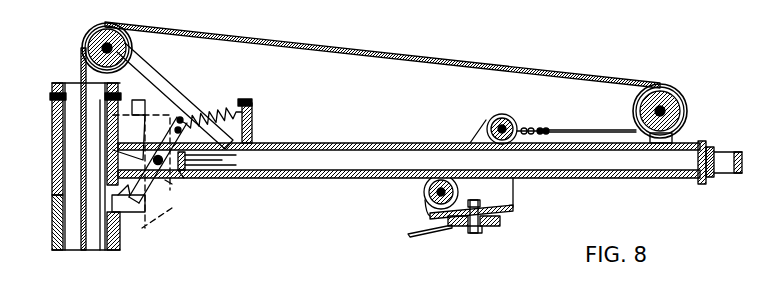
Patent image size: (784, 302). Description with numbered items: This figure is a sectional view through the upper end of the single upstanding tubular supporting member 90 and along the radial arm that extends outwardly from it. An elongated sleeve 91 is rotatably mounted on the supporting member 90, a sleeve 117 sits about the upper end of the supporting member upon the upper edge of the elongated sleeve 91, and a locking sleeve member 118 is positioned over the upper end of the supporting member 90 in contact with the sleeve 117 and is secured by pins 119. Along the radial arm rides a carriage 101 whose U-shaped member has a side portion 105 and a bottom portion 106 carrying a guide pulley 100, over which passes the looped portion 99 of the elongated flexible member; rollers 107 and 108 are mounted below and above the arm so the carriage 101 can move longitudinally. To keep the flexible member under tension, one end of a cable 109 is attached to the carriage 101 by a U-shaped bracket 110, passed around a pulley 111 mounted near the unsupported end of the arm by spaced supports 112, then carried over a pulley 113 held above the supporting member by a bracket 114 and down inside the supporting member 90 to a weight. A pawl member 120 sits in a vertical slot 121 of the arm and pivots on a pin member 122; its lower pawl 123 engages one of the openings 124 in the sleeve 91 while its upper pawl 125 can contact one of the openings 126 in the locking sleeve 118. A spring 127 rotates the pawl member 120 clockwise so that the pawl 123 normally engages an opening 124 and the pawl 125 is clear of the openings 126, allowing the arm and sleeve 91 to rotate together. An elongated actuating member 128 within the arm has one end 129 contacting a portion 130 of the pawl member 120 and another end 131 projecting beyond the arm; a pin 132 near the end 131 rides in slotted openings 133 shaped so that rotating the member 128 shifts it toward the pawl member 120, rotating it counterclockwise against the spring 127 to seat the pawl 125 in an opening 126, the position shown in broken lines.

The supporting member 90 is at (72, 250).
The elongated sleeve 91 is at (52, 225).
The looped portion 99 is at (422, 238).
The guide pulley 100 is at (500, 229).
The carriage 101 is at (518, 191).
The side portion 105 is at (470, 143).
The bottom portion 106 is at (507, 211).
The roller 107 is at (423, 198).
The roller 108 is at (515, 123).
The cable 109 is at (83, 70).
The U-shaped bracket 110 is at (531, 129).
The pulley 111 is at (683, 93).
The spaced supports 112 is at (694, 139).
The pulley 113 is at (92, 25).
The bracket 114 is at (152, 57).
The sleeve 117 is at (52, 162).
The locking sleeve member 118 is at (52, 113).
The pins 119 is at (52, 97).
The pawl member 120 is at (160, 192).
The vertical slot 121 is at (175, 173).
The pin member 122 is at (168, 182).
The pawl 123 is at (120, 200).
The openings 124 is at (118, 212).
The pawl 125 is at (145, 105).
The openings 126 is at (142, 107).
The spring 127 is at (232, 110).
The elongated actuating member 128 is at (349, 163).
The end 129 is at (222, 172).
The portion 130 is at (236, 160).
The end 131 is at (742, 157).
The pin 132 is at (707, 180).
The slotted openings 133 is at (700, 142).